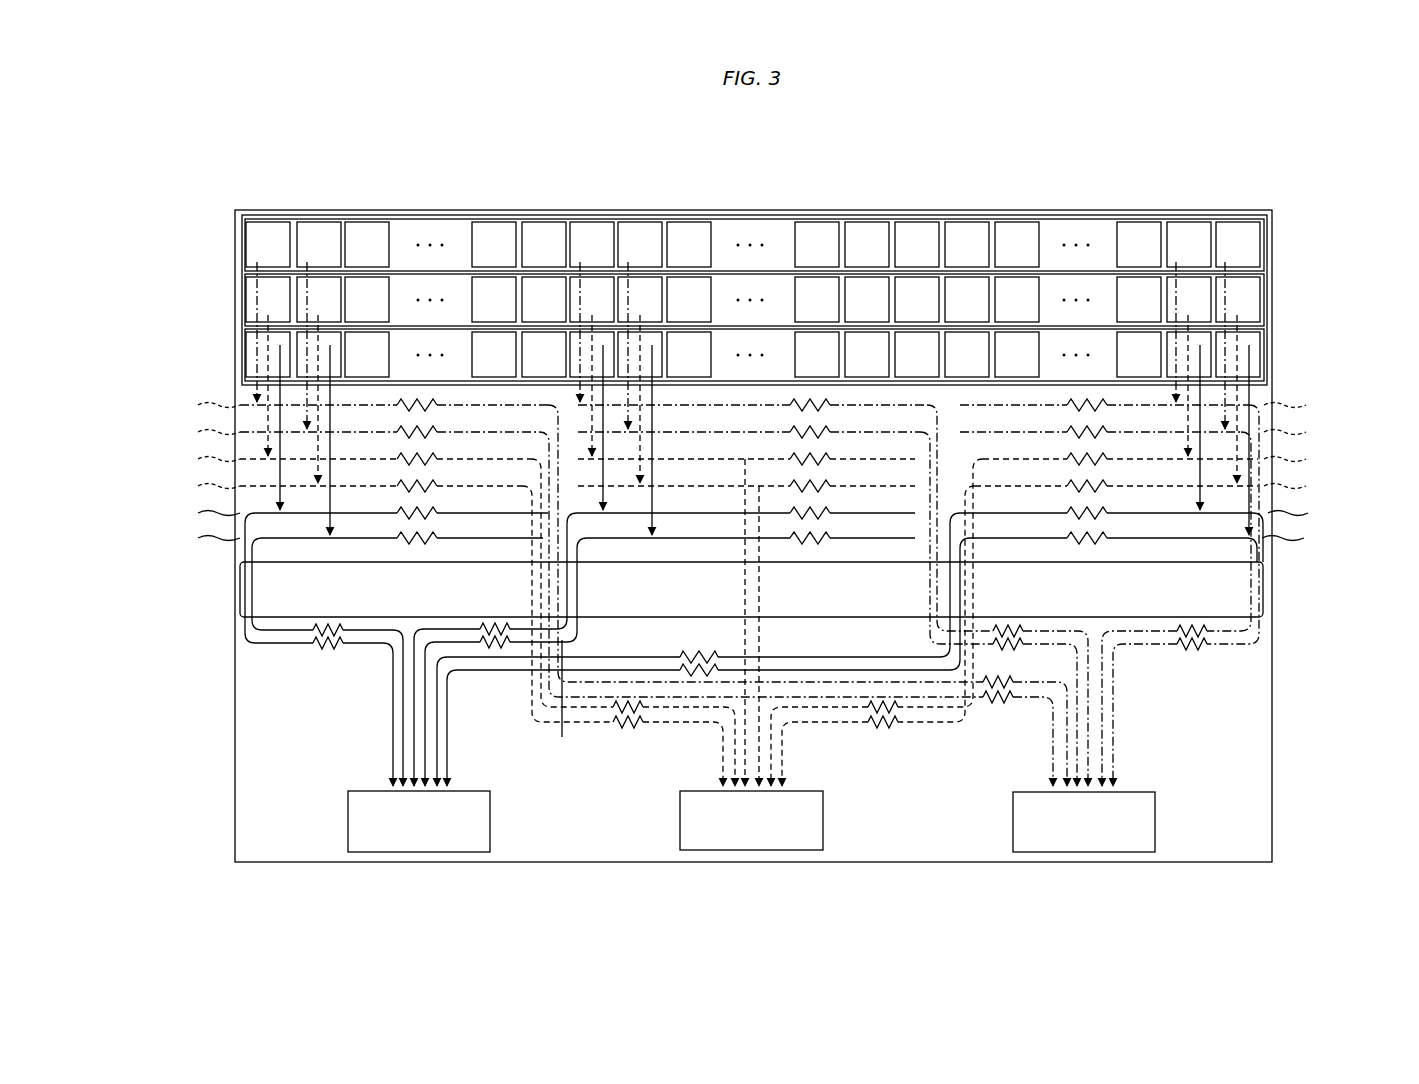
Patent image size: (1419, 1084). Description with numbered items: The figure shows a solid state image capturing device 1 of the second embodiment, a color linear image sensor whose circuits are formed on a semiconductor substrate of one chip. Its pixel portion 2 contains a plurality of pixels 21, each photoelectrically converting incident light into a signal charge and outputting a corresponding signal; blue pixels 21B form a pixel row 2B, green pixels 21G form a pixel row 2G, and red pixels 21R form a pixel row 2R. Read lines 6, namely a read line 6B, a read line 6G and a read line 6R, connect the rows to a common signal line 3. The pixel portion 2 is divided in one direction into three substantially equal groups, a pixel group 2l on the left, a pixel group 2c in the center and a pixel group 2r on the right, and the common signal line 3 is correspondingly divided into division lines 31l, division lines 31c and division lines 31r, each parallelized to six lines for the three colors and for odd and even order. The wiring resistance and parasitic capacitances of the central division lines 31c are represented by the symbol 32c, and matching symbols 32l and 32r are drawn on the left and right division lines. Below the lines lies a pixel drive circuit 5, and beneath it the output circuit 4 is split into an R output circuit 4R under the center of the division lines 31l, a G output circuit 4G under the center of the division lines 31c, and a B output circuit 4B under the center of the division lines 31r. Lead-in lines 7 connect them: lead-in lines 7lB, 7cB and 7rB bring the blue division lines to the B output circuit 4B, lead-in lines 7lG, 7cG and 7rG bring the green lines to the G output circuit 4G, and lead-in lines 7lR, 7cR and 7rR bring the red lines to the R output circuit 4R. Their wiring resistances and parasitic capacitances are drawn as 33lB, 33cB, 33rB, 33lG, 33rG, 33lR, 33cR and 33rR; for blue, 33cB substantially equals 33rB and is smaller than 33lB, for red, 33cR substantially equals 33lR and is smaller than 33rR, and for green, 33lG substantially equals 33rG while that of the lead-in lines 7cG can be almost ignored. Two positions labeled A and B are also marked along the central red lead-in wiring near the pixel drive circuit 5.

The solid state image capturing device 1 is at (1272, 212).
The pixel portion 2 is at (1318, 232).
The pixel row 2B is at (1260, 245).
The pixel row 2G is at (1260, 300).
The pixel row 2R is at (1260, 355).
The pixel group 2l is at (248, 210).
The pixel group 2c is at (572, 210).
The pixel group 2r is at (1262, 210).
The pixel 21 is at (467, 160).
The blue pixel 21B is at (370, 222).
The green pixel 21G is at (389, 300).
The red pixel 21R is at (389, 349).
The common signal line 3 is at (1354, 388).
The output circuit 4 is at (388, 902).
The R output circuit 4R is at (420, 852).
The G output circuit 4G is at (744, 851).
The B output circuit 4B is at (1068, 852).
The pixel drive circuit 5 is at (1264, 590).
The read line 6 is at (182, 262).
The read line 6B is at (240, 276).
The read line 6G is at (240, 323).
The read line 6R is at (240, 380).
The lead-in line 7 is at (1206, 678).
The lead-in lines 7lR is at (403, 719).
The lead-in lines 7cR is at (425, 753).
The lead-in lines 7rR is at (437, 762).
The lead-in lines 7lG is at (680, 726).
The lead-in lines 7cG is at (762, 633).
The lead-in lines 7rG is at (784, 762).
The lead-in lines 7lB is at (1056, 708).
The lead-in lines 7cB is at (1081, 636).
The lead-in lines 7rB is at (1102, 736).
The division lines 31l is at (160, 392).
The division lines 31c is at (897, 547).
The division lines 31r is at (1352, 392).
The left bus resistors 32l is at (448, 397).
The wiring resistance and parasitic capacitances 32c is at (777, 547).
The right bus resistors 32r is at (1061, 397).
The wiring resistance and parasitic capacitances 33lR is at (320, 636).
The wiring resistance and parasitic capacitances 33cR is at (495, 650).
The wiring resistance and parasitic capacitances 33rR is at (682, 660).
The wiring resistance and parasitic capacitances 33lG is at (624, 712).
The wiring resistance and parasitic capacitances 33rG is at (882, 728).
The wiring resistance and parasitic capacitances 33lB is at (998, 702).
The wiring resistance and parasitic capacitances 33cB is at (1006, 636).
The wiring resistance and parasitic capacitances 33rB is at (1190, 636).
The point A is at (580, 606).
The point B is at (560, 702).